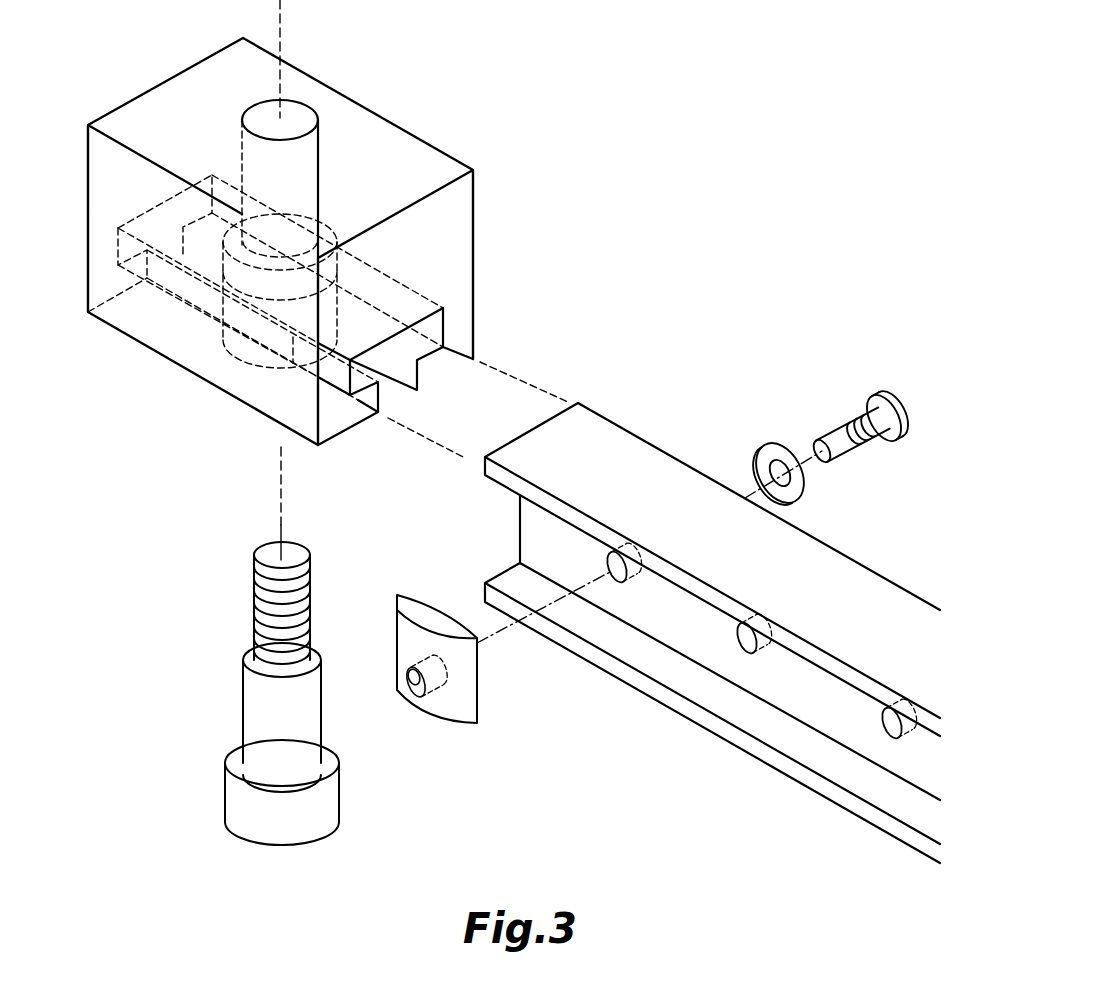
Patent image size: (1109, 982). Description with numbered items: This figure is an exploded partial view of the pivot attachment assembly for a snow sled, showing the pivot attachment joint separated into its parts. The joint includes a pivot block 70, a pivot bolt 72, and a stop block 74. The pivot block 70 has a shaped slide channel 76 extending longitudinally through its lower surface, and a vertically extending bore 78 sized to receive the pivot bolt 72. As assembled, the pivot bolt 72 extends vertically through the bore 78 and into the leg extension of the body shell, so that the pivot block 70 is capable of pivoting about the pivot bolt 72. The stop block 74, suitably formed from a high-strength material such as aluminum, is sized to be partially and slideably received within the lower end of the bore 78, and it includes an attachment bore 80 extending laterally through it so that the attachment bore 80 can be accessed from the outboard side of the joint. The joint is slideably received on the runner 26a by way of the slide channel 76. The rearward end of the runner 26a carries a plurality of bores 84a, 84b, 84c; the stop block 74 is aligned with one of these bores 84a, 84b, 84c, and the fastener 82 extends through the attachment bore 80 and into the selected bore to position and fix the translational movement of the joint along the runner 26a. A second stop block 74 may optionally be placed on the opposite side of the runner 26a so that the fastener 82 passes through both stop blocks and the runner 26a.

The pivot block 70 is at (475, 219).
The pivot bolt 72 is at (335, 798).
The stop block 74 is at (442, 721).
The shaped slide channel 76 is at (428, 348).
The vertically extending bore 78 is at (288, 82).
The attachment bore 80 is at (412, 674).
The fastener 82 is at (843, 425).
The runner 26a is at (847, 573).
The bore 84a is at (617, 578).
The bore 84b is at (743, 642).
The bore 84c is at (890, 727).